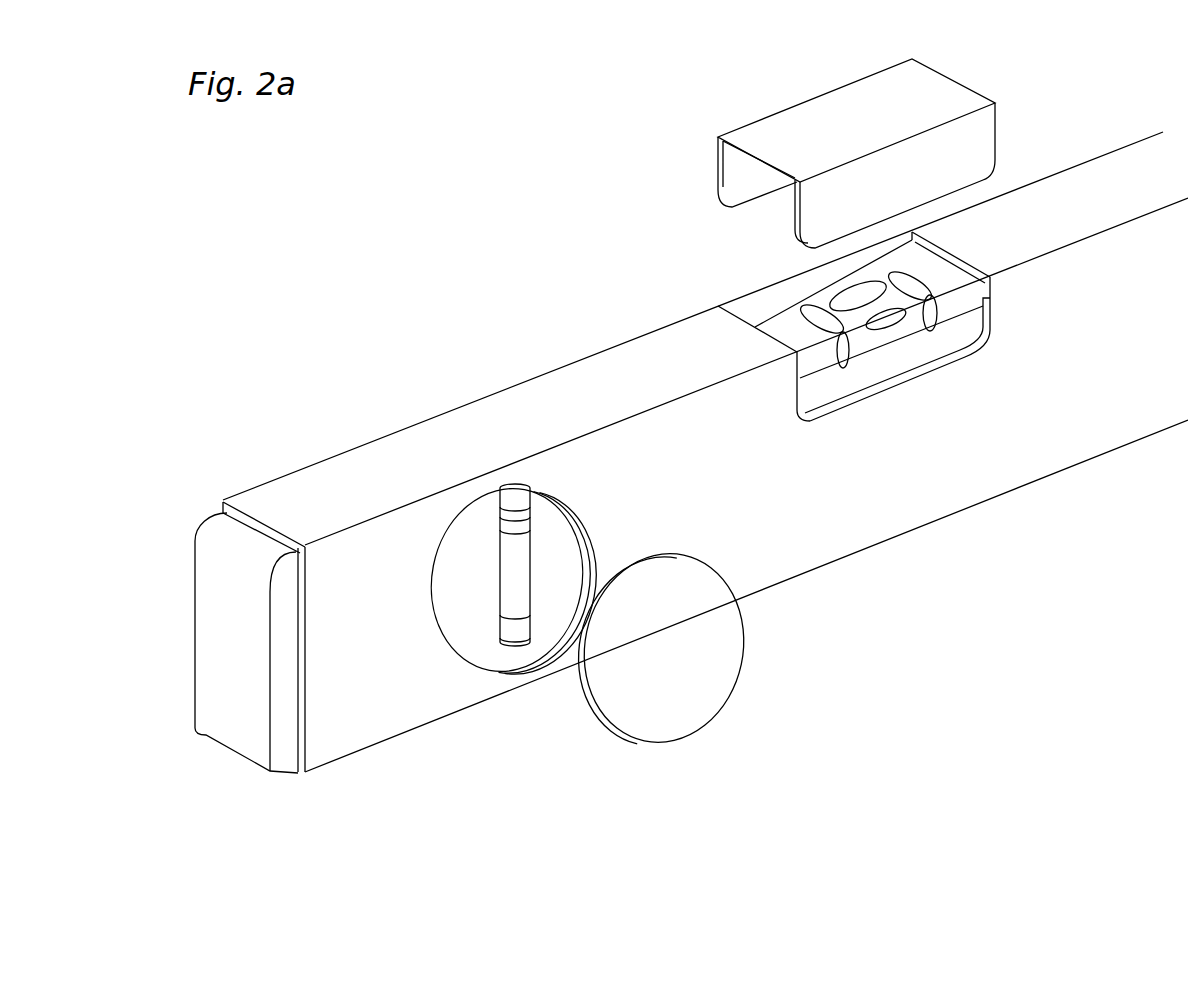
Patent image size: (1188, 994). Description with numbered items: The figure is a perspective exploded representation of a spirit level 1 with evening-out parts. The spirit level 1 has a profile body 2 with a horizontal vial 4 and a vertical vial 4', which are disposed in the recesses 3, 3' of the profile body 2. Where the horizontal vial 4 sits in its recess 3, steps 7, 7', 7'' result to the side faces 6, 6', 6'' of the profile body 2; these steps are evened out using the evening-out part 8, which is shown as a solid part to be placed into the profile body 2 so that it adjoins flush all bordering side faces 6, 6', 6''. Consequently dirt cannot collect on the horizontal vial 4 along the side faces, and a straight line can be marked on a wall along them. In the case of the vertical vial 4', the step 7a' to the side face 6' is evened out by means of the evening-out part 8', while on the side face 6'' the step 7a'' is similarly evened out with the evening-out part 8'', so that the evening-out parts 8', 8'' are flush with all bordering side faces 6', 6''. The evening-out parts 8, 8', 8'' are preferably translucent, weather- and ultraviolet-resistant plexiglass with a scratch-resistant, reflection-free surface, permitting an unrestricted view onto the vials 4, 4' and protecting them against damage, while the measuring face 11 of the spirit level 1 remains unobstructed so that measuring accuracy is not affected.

The spirit level 1 is at (437, 283).
The profile body 2 is at (262, 503).
The recess 3 is at (775, 400).
The recess 3' is at (482, 579).
The horizontal vial 4 is at (883, 347).
The vertical vial 4' is at (451, 565).
The side face 6 is at (705, 452).
The side face 6' is at (1094, 325).
The side face 6'' is at (1080, 134).
The step 7 is at (917, 303).
The step 7' is at (897, 370).
The step 7'' is at (814, 289).
The step 7a' is at (588, 583).
The step 7a'' is at (366, 369).
The evening-out part 8 is at (856, 153).
The evening-out part 8' is at (664, 648).
The evening-out part 8'' is at (539, 312).
The measuring face 11 is at (468, 715).